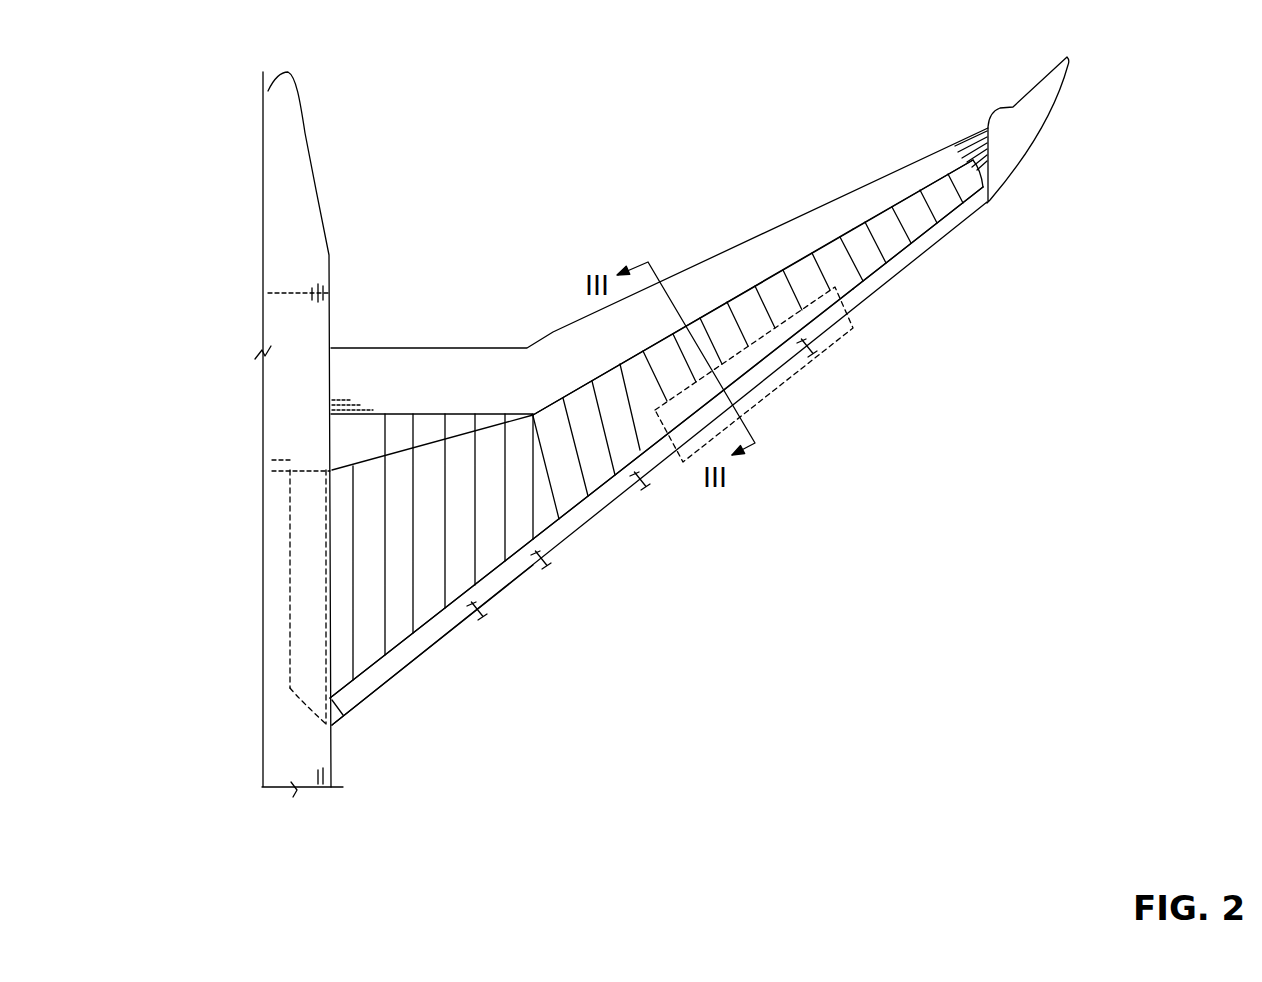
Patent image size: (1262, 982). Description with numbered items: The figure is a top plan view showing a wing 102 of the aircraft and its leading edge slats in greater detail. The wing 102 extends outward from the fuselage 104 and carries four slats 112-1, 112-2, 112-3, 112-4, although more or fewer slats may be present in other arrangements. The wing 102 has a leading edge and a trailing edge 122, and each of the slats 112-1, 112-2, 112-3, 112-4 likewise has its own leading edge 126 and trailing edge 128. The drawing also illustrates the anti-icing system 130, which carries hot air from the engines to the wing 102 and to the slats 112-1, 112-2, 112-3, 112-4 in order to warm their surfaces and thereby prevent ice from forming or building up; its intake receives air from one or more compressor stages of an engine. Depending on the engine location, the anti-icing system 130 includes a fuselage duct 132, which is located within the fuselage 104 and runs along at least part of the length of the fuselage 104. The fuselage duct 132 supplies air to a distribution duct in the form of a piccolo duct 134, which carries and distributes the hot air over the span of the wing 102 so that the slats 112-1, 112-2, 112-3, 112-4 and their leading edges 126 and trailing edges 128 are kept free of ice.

The wing 102 is at (608, 386).
The fuselage 104 is at (293, 432).
The slat 112-1 is at (507, 577).
The slat 112-2 is at (633, 478).
The slat 112-3 is at (805, 338).
The slat 112-4 is at (893, 267).
The trailing edge 122 is at (810, 207).
The leading edge 126 is at (947, 230).
The trailing edge 128 is at (955, 203).
The anti-icing system 130 is at (243, 598).
The fuselage duct 132 is at (293, 655).
The piccolo duct 134 is at (378, 688).